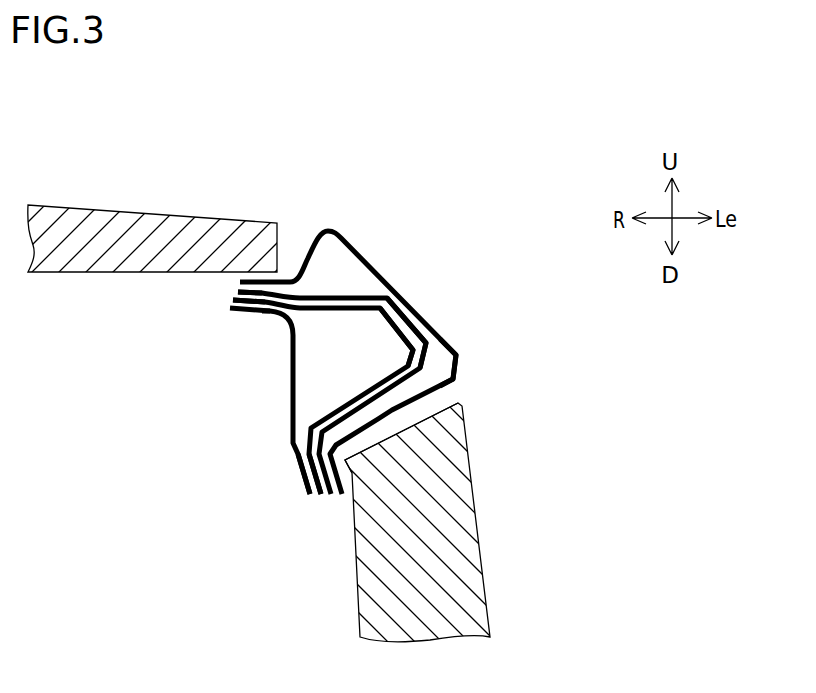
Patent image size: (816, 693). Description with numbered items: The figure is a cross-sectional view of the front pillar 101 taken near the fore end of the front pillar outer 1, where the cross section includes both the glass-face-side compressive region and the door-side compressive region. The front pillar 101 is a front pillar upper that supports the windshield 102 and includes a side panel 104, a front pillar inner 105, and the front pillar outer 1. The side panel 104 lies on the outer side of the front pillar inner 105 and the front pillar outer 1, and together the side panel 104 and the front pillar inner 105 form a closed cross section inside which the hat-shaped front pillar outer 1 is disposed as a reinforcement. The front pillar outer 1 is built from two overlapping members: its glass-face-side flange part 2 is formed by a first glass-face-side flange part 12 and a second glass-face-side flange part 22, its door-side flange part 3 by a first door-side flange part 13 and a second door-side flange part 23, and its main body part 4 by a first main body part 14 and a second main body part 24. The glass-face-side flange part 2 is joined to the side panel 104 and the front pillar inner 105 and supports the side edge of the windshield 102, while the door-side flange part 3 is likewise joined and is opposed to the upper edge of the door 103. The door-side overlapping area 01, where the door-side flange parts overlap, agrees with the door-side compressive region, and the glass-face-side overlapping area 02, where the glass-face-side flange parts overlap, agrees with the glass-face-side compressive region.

The front pillar outer 1 is at (452, 372).
The glass-face-side flange part 2 is at (204, 350).
The door-side flange part 3 is at (221, 513).
The main body part 4 is at (469, 309).
The first glass-face-side flange part 12 is at (267, 313).
The first door-side flange part 13 is at (310, 484).
The first main body part 14 is at (413, 333).
The second glass-face-side flange part 22 is at (237, 308).
The second door-side flange part 23 is at (317, 497).
The second main body part 24 is at (413, 303).
The door-side overlapping area 01 is at (345, 461).
The glass-face-side overlapping area 02 is at (267, 312).
The front pillar 101 is at (418, 197).
The windshield 102 is at (128, 220).
The door 103 is at (477, 528).
The side panel 104 is at (377, 250).
The front pillar inner 105 is at (298, 368).